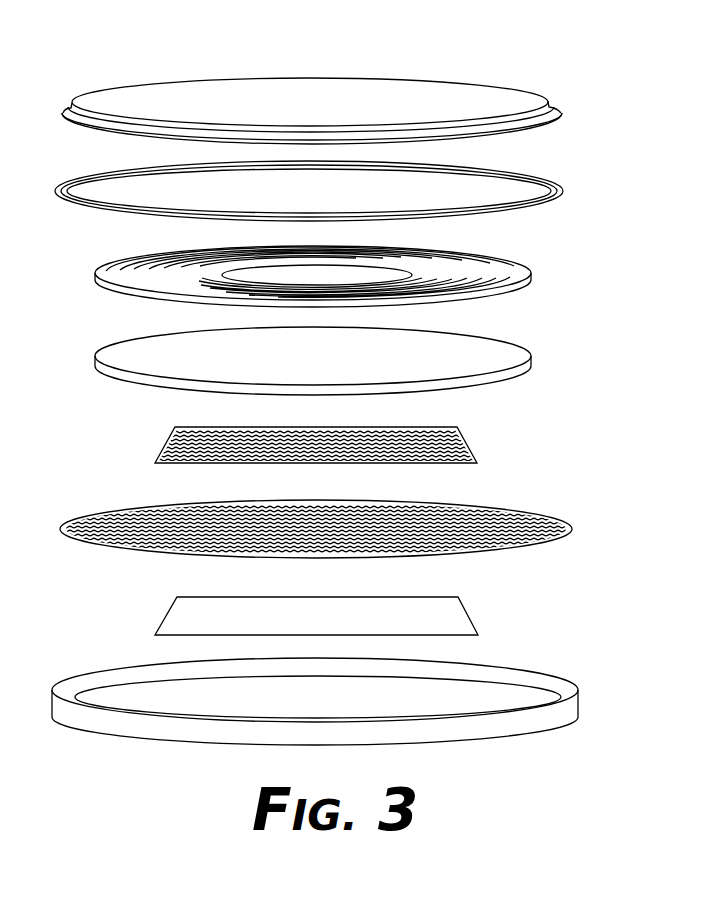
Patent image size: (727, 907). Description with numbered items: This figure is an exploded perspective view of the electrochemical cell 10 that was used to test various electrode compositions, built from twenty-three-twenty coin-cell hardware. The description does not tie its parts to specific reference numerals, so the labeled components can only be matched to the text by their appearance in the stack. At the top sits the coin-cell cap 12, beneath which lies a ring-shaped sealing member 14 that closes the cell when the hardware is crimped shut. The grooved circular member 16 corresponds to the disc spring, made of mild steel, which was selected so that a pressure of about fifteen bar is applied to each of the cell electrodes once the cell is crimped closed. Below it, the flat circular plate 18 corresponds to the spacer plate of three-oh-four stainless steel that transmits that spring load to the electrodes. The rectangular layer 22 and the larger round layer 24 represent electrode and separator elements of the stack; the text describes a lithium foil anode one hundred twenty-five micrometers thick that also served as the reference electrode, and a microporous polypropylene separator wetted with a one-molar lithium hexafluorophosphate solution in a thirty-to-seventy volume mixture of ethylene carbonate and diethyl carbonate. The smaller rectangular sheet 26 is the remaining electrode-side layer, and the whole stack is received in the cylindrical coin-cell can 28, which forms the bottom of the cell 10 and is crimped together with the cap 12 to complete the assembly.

The pressure-sensitive switch assembly 10 is at (485, 62).
The top cover 12 is at (542, 98).
The sealing ring 14 is at (562, 190).
The grooved disc 16 is at (524, 266).
The disc 18 is at (530, 352).
The rectangular wavy pad 22 is at (462, 447).
The round wavy pad 24 is at (550, 526).
The rectangular sheet 26 is at (462, 620).
The base ring 28 is at (547, 722).